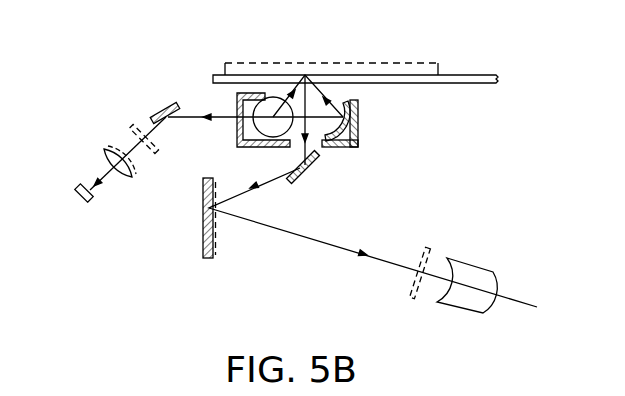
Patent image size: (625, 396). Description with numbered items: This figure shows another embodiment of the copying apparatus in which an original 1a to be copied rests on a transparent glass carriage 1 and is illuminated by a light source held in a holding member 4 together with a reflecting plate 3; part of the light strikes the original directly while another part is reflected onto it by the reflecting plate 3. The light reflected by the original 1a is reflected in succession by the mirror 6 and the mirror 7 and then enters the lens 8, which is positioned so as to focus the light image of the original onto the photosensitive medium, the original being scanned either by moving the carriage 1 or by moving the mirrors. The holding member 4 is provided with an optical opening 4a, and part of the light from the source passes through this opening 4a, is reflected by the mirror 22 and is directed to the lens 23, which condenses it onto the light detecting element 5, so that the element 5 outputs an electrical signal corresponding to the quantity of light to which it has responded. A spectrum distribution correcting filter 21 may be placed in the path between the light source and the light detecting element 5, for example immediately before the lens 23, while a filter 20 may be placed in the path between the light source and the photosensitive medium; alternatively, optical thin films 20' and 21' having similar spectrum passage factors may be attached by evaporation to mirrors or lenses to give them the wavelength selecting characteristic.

The transparent glass carriage 1 is at (470, 75).
The original 1a is at (395, 62).
The reflecting plate 3 is at (358, 133).
The holding member 4 is at (237, 140).
The optical opening 4a is at (237, 108).
The light detecting element 5 is at (76, 196).
The mirror 6 is at (312, 168).
The mirror 7 is at (203, 255).
The lens 8 is at (475, 270).
The filter 20 is at (398, 280).
The optical thin film 20' is at (241, 228).
The spectrum distribution correcting filter 21 is at (127, 123).
The optical thin film 21' is at (99, 154).
The mirror 22 is at (160, 106).
The lens 23 is at (121, 180).